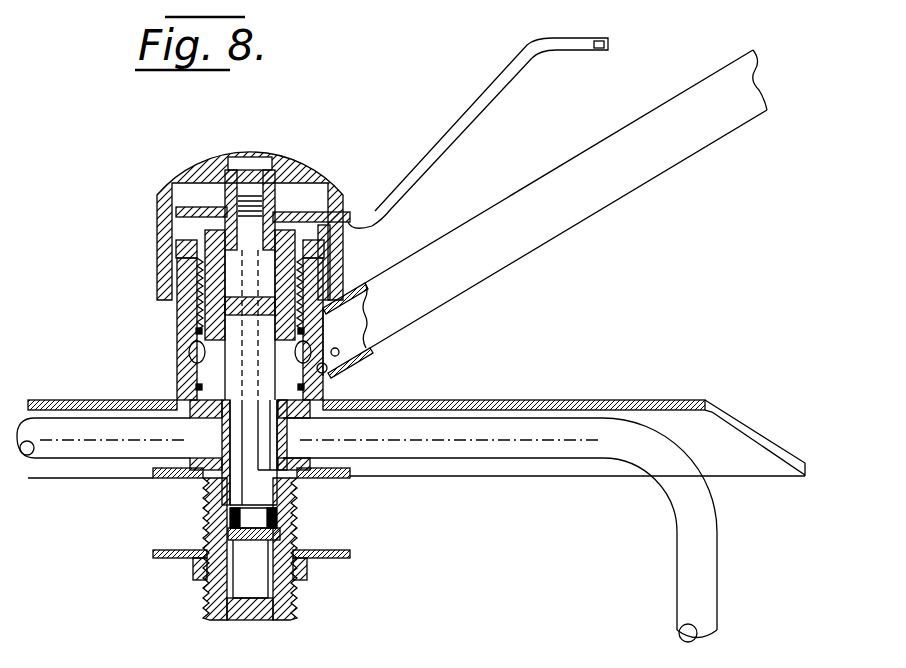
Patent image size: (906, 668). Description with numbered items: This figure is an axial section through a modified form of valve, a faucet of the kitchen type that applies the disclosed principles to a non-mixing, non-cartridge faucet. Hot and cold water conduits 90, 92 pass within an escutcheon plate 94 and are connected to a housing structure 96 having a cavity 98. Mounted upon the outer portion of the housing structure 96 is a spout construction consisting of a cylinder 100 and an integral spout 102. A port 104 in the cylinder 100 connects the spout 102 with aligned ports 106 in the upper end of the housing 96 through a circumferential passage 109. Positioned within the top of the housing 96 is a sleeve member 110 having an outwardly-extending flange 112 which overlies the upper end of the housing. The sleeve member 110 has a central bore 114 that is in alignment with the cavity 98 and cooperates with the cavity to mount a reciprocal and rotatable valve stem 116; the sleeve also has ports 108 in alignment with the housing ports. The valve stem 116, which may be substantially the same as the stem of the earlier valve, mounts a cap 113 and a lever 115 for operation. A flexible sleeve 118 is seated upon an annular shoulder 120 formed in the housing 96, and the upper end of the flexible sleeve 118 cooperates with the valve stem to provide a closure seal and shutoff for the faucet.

The hot water conduit 90 is at (55, 440).
The cold water conduit 92 is at (565, 438).
The escutcheon plate 94 is at (605, 400).
The housing structure 96 is at (212, 508).
The cavity 98 is at (272, 487).
The cylinder 100 is at (183, 317).
The spout 102 is at (620, 182).
The port 104 is at (367, 313).
The ports 106 is at (325, 374).
The ports 108 is at (215, 362).
The circumferential passage 109 is at (340, 355).
The sleeve member 110 is at (207, 286).
The outwardly-extending flange 112 is at (183, 248).
The cap 113 is at (235, 172).
The central bore 114 is at (322, 268).
The lever 115 is at (520, 60).
The valve stem 116 is at (258, 215).
The flexible sleeve 118 is at (228, 433).
The annular shoulder 120 is at (205, 480).